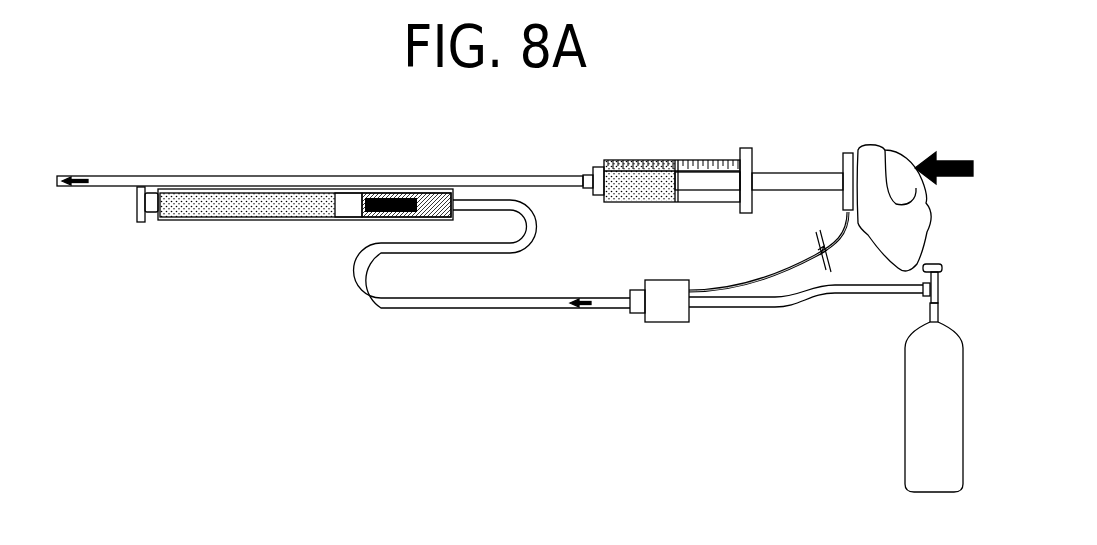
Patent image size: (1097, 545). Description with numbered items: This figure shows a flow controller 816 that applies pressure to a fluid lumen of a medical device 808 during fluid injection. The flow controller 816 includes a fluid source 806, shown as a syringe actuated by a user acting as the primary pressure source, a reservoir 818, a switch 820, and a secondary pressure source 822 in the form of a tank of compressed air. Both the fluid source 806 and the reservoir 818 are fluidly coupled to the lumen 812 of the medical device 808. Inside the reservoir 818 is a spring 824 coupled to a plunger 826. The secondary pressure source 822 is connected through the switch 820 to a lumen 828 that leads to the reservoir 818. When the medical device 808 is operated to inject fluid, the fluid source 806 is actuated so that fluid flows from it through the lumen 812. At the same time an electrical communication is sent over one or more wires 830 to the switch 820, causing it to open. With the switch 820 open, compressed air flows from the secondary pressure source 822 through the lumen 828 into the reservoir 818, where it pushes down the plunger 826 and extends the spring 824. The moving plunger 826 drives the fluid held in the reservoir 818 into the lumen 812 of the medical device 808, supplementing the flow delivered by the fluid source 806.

The fluid source 806 is at (640, 170).
The medical device 808 is at (275, 186).
The lumen 812 is at (197, 176).
The flow controller 816 is at (288, 301).
The reservoir 818 is at (213, 221).
The switch 820 is at (668, 280).
The secondary pressure source 822 is at (905, 419).
The spring 824 is at (432, 197).
The plunger 826 is at (348, 200).
The lumen 828 is at (493, 309).
The wires 830 is at (795, 265).